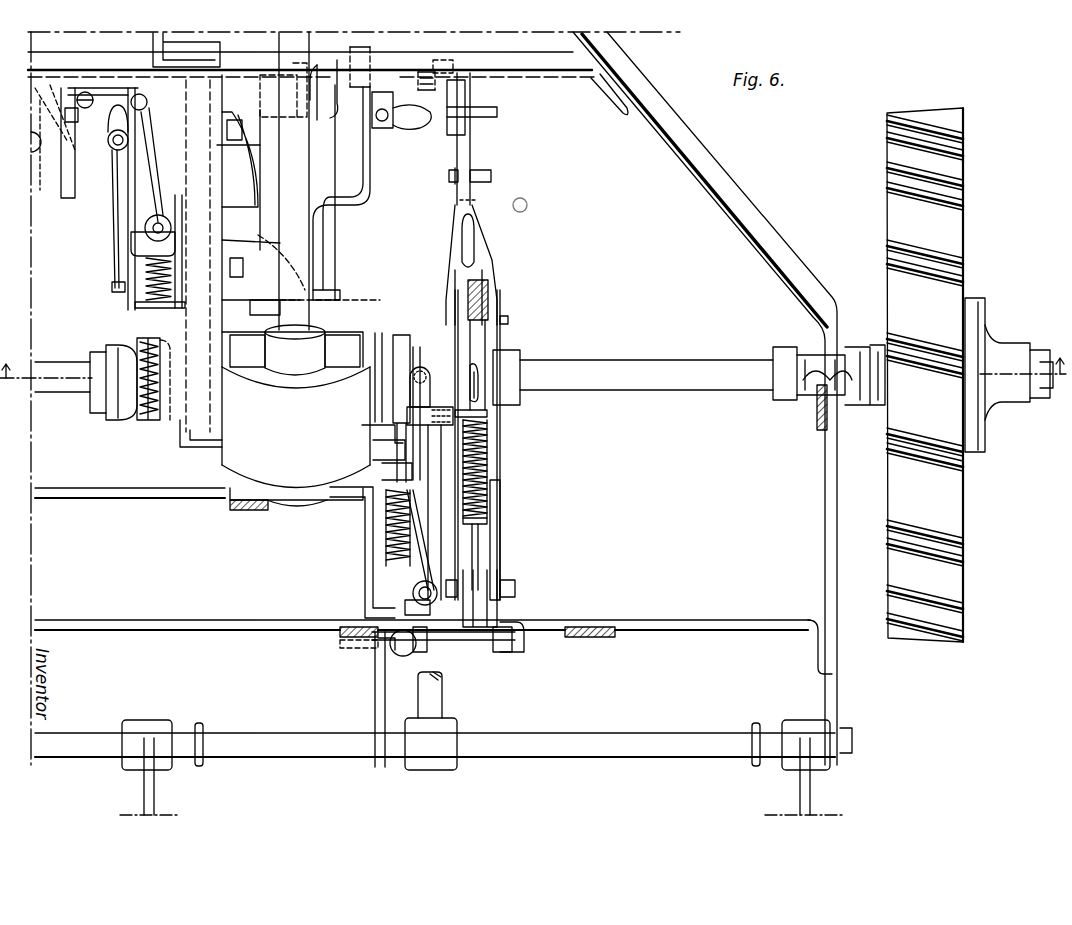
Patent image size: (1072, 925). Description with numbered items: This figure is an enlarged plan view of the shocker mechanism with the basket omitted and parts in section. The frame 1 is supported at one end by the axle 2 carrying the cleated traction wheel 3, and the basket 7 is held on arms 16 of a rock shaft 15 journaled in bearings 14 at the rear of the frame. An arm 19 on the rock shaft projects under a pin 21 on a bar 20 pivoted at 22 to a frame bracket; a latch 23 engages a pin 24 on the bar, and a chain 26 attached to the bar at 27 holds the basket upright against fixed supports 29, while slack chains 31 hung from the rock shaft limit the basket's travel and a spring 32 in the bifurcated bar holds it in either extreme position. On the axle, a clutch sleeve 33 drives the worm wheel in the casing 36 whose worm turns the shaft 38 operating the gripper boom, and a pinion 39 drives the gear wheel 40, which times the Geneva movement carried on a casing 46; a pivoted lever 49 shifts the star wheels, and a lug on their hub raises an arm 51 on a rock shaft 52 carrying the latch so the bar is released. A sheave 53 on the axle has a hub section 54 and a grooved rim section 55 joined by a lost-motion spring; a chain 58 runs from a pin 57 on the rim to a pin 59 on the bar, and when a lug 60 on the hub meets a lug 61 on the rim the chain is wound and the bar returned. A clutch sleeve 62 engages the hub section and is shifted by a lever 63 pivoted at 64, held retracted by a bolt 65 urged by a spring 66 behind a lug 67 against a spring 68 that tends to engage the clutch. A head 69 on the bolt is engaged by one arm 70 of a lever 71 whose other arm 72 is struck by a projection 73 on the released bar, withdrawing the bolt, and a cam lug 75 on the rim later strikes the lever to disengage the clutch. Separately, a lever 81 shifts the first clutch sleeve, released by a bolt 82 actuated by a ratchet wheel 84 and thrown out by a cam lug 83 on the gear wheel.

The frame 1 is at (75, 494).
The axle 2 is at (604, 382).
The traction wheel 3 is at (933, 237).
The basket 7 is at (664, 108).
The bearings 14 is at (380, 768).
The rock shaft 15 is at (518, 742).
The arms 16 is at (146, 796).
The arm 19 is at (432, 697).
The bar 20 is at (480, 205).
The pin 21 is at (418, 405).
The pivot 22 is at (515, 591).
The latch 23 is at (470, 138).
The pin 24 is at (497, 113).
The chain 26 is at (460, 203).
The attachment point 27 is at (496, 177).
The supports 29 is at (250, 508).
The chains 31 is at (198, 762).
The spring 32 is at (497, 520).
The clutch sleeve 33 is at (111, 420).
The casing 36 is at (258, 307).
The shaft 38 is at (266, 182).
The pinion 39 is at (183, 436).
The gear wheel 40 is at (176, 108).
The casing 46 is at (347, 172).
The pivoted lever 49 is at (388, 128).
The arm 51 is at (334, 113).
The rock shaft 52 is at (428, 90).
The sheave 53 is at (488, 343).
The hub section 54 is at (448, 293).
The grooved rim section 55 is at (450, 271).
The pin 57 is at (480, 377).
The chain 58 is at (498, 280).
The pin 59 is at (508, 320).
The lug 60 is at (504, 458).
The lug 61 is at (500, 491).
The clutch sleeve 62 is at (399, 345).
The lever 63 is at (385, 468).
The pivot 64 is at (413, 597).
The bolt 65 is at (375, 452).
The spring 66 is at (386, 517).
The lug 67 is at (366, 437).
The spring 68 is at (413, 569).
The head 69 is at (401, 654).
The arm 70 is at (372, 647).
The lever 71 is at (465, 646).
The arm 72 is at (525, 630).
The projection 73 is at (503, 561).
The cam lug 75 is at (443, 512).
The lever 81 is at (117, 297).
The bolt 82 is at (140, 267).
The cam lug 83 is at (176, 340).
The ratchet wheel 84 is at (70, 152).